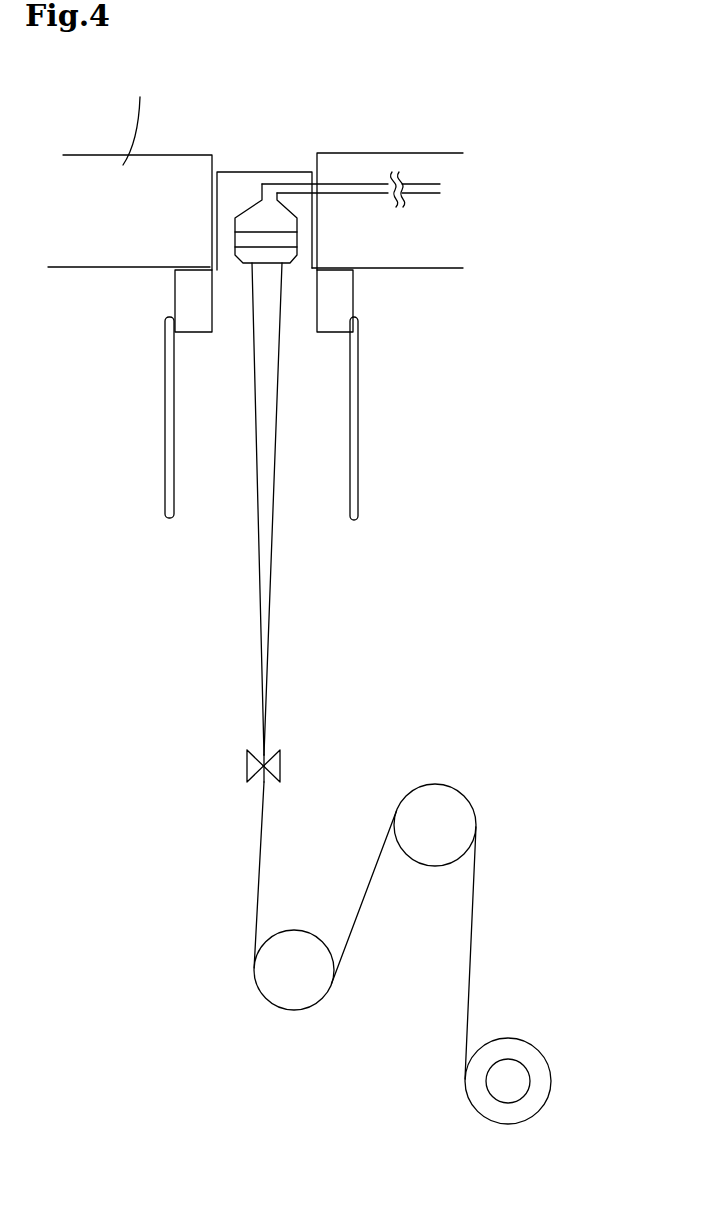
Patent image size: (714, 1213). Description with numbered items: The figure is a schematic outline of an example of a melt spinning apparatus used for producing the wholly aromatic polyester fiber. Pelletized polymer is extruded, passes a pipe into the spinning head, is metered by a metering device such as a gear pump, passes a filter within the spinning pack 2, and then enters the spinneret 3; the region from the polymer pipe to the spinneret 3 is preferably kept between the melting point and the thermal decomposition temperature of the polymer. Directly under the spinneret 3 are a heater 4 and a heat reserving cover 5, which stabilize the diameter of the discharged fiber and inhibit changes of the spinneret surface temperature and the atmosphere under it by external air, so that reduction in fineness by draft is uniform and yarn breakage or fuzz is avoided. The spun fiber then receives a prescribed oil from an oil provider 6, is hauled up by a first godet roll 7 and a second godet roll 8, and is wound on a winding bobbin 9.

The spinning pack 2 is at (238, 178).
The spinneret 3 is at (222, 240).
The heater 4 is at (337, 297).
The heat reserving cover 5 is at (163, 465).
The oil provider 6 is at (283, 760).
The first godet roll 7 is at (254, 975).
The second godet roll 8 is at (447, 797).
The winding bobbin 9 is at (540, 1053).